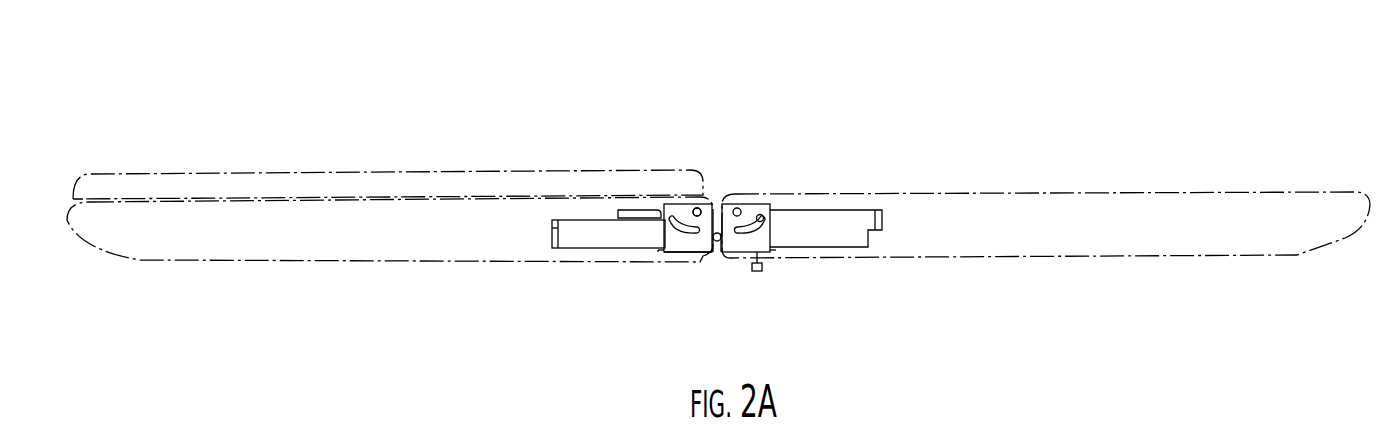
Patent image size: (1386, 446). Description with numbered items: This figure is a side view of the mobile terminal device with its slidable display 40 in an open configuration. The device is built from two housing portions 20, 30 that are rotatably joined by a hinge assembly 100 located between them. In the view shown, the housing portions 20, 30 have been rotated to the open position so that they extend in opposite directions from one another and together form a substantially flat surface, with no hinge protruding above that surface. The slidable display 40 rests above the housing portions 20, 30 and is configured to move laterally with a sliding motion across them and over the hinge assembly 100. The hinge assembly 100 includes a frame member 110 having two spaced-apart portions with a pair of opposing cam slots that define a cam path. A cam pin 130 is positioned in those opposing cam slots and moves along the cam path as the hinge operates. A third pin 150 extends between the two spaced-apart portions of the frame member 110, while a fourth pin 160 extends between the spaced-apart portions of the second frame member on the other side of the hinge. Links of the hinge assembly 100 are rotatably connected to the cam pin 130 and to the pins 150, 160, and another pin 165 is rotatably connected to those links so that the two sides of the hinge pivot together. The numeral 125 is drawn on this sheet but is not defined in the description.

The housing portion 20 is at (1043, 193).
The housing portion 30 is at (597, 263).
The slidable display 40 is at (657, 170).
The hinge assembly 100 is at (717, 186).
The frame member 110 is at (827, 104).
The pivot 125 is at (697, 262).
The cam pin 130 is at (763, 215).
The third pin 150 is at (736, 207).
The fourth pin 160 is at (700, 204).
The pin 165 is at (719, 243).